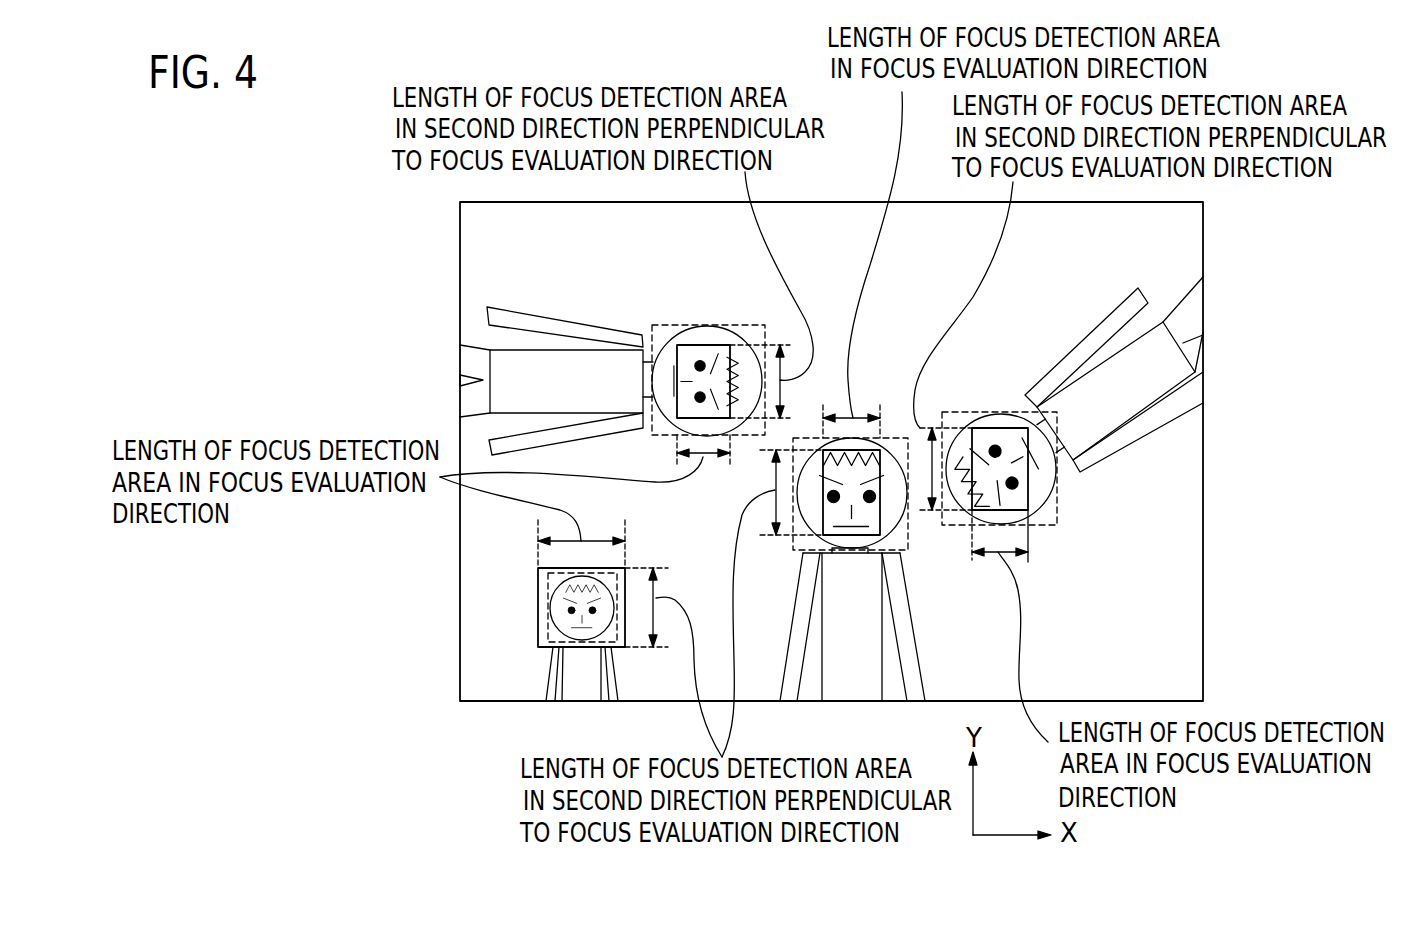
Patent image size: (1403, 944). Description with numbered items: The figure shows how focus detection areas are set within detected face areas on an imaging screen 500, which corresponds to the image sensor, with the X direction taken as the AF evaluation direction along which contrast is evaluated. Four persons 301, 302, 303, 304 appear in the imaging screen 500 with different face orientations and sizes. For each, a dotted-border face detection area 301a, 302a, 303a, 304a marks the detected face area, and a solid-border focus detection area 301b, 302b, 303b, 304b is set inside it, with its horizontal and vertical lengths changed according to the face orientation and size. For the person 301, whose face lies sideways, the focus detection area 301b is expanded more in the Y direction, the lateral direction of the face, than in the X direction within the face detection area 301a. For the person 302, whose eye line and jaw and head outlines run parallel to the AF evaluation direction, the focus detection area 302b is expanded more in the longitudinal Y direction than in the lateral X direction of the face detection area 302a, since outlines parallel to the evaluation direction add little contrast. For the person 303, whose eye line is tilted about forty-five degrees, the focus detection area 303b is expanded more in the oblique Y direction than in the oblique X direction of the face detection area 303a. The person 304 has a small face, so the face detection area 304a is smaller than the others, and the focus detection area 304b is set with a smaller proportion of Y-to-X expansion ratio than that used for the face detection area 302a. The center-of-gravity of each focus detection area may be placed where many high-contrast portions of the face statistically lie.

The imaging screen 500 is at (1203, 540).
The person 301 is at (550, 360).
The face detection area 301a is at (655, 323).
The focus detection area 301b is at (705, 345).
The person 302 is at (851, 682).
The face detection area 302a is at (793, 550).
The focus detection area 302b is at (880, 505).
The person 303 is at (1107, 357).
The face detection area 303a is at (1057, 515).
The focus detection area 303b is at (978, 428).
The person 304 is at (582, 682).
The face detection area 304a is at (550, 590).
The focus detection area 304b is at (618, 647).